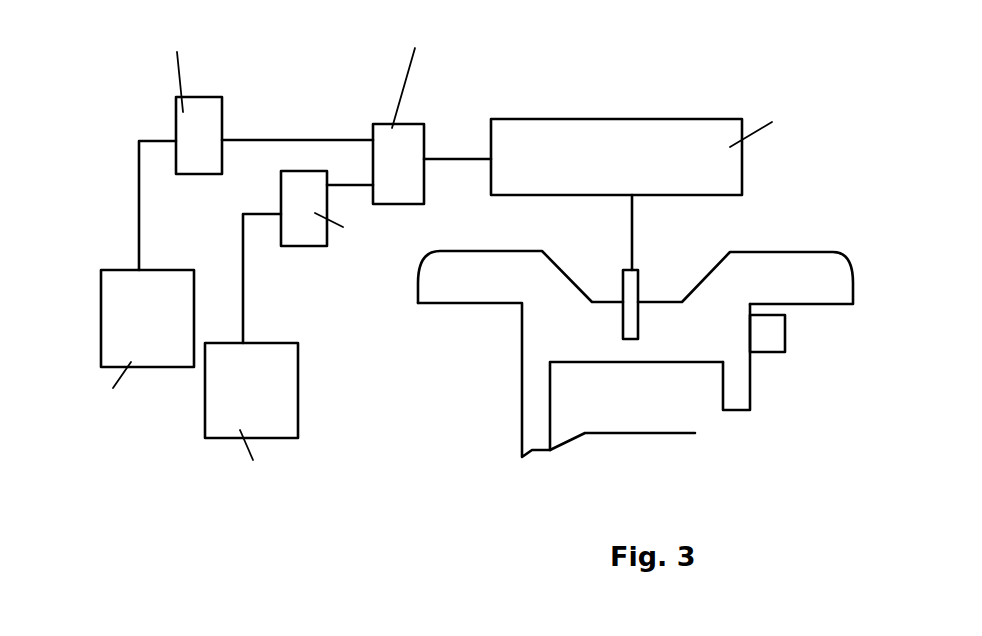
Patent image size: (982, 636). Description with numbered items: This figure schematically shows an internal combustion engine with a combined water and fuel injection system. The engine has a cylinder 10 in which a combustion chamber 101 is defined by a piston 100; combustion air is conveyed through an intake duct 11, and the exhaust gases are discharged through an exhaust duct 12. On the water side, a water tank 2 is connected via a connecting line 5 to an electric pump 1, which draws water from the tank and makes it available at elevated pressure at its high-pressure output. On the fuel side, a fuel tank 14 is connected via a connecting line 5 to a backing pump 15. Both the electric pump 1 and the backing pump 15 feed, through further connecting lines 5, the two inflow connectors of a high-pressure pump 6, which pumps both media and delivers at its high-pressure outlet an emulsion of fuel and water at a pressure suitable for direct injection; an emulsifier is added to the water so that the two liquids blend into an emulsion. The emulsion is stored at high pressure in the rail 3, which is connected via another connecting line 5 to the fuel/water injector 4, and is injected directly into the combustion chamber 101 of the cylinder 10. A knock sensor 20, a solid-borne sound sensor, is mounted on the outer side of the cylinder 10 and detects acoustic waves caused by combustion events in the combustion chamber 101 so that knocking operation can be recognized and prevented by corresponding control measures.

The electric pump 1 is at (205, 97).
The water tank 2 is at (118, 311).
The water rail 3 is at (698, 125).
The fuel/water injector 4 is at (627, 282).
The connecting line 5 is at (288, 140).
The high-pressure pump 6 is at (407, 138).
The cylinder 10 is at (745, 377).
The intake duct 11 is at (445, 285).
The exhaust duct 12 is at (797, 270).
The fuel tank 14 is at (285, 415).
The backing pump 15 is at (311, 233).
The knock sensor 20 is at (778, 330).
The piston 100 is at (722, 400).
The combustion chamber 101 is at (595, 352).